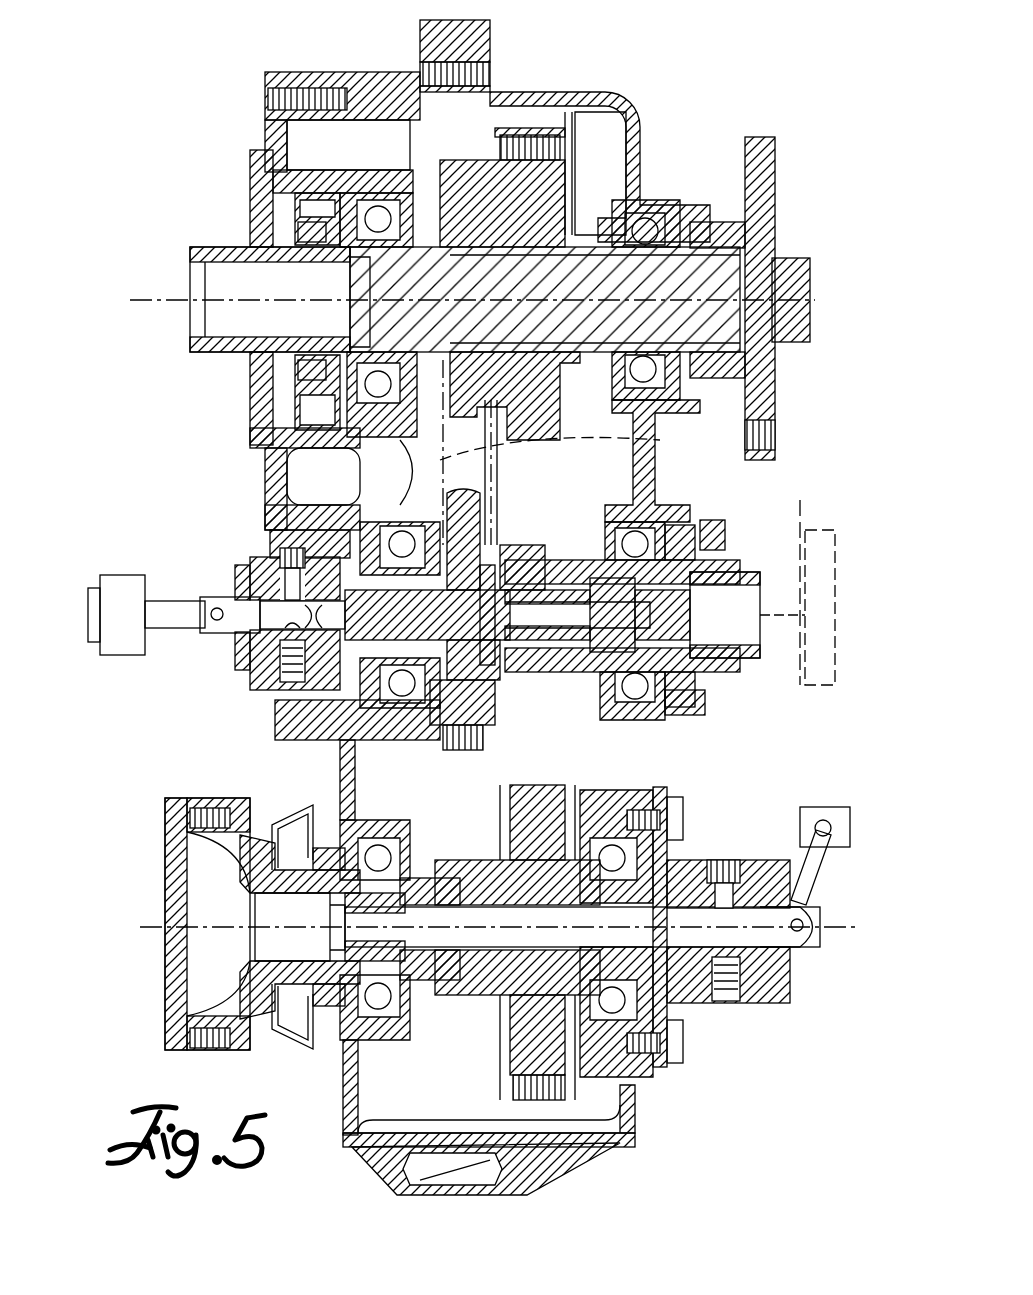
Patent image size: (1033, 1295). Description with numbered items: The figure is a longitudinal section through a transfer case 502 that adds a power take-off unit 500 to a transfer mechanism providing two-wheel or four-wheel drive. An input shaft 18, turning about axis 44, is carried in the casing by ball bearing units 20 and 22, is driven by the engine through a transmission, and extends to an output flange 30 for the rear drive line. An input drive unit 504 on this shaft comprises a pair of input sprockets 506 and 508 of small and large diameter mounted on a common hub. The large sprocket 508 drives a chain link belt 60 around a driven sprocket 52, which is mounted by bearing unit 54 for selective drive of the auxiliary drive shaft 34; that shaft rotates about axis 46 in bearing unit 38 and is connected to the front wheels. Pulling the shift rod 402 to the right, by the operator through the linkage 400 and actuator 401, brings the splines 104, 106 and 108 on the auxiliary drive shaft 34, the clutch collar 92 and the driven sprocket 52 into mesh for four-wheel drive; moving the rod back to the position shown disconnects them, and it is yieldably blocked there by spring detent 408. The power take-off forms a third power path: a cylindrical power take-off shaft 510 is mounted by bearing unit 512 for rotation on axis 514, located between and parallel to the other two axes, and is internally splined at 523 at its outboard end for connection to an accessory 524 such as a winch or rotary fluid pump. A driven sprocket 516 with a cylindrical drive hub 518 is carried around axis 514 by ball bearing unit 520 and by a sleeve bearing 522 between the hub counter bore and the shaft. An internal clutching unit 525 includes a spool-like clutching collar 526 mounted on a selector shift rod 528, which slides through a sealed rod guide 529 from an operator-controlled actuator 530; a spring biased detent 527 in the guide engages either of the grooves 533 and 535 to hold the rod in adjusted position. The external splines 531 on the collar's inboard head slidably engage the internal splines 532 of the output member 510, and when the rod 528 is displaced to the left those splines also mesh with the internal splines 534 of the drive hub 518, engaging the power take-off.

The transfer case 502 is at (550, 90).
The input drive unit 504 is at (580, 130).
The input sprocket 506 is at (430, 198).
The input sprocket 508 is at (530, 195).
The output flange 30 is at (755, 160).
The axis 44 is at (148, 290).
The input shaft 18 is at (545, 322).
The ball bearing unit 20 is at (380, 372).
The ball bearing unit 22 is at (638, 358).
The chain link belt 60 is at (574, 440).
The bearing unit 512 is at (650, 520).
The power take-off unit 500 is at (713, 530).
The accessory 524 is at (818, 500).
The ball bearing unit 520 is at (402, 530).
The selector shift rod 528 is at (430, 600).
The actuator 530 is at (130, 575).
The sealed rod guide 529 is at (240, 665).
The groove 533 is at (290, 600).
The spring biased detent 527 is at (290, 684).
The groove 535 is at (315, 640).
The internal splines 534 is at (490, 560).
The external splines 531 is at (520, 595).
The internal splines 532 is at (550, 585).
The clutching collar 526 is at (575, 652).
The sleeve bearing 522 is at (615, 533).
The internal clutching unit 525 is at (600, 558).
The internal splines 523 is at (725, 590).
The power take-off shaft 510 is at (700, 690).
The axis 514 is at (800, 670).
The drive hub 518 is at (495, 690).
The driven sprocket 516 is at (440, 720).
The axis 46 is at (148, 927).
The auxiliary drive shaft 34 is at (258, 832).
The bearing unit 38 is at (378, 845).
The clutch collar 92 is at (424, 879).
The splines 106 is at (480, 878).
The splines 108 is at (480, 938).
The shift rod 402 is at (590, 950).
The driven sprocket 52 is at (538, 790).
The bearing unit 54 is at (612, 845).
The splines 104 is at (425, 962).
The linkage 400 is at (745, 875).
The spring detent 408 is at (735, 1003).
The actuator 401 is at (825, 805).